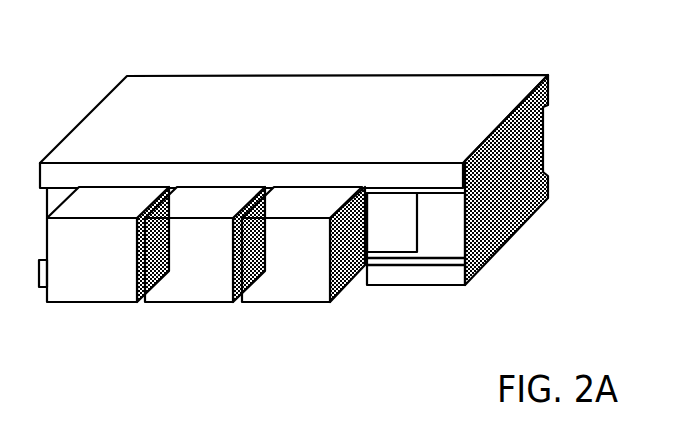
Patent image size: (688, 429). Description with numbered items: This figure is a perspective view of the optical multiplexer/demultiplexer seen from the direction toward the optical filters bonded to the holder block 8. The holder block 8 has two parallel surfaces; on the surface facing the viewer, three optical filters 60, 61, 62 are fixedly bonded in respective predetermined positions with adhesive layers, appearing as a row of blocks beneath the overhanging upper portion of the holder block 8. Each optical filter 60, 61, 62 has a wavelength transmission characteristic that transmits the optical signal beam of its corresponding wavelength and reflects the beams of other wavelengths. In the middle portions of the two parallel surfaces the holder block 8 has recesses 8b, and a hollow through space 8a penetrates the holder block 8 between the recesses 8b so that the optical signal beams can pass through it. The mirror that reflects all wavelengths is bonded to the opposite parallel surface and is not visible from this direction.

The holder block 8 is at (336, 190).
The hollow through space 8a is at (423, 278).
The recess 8b is at (549, 184).
The optical filter 60 is at (104, 272).
The optical filter 61 is at (205, 272).
The optical filter 62 is at (305, 272).